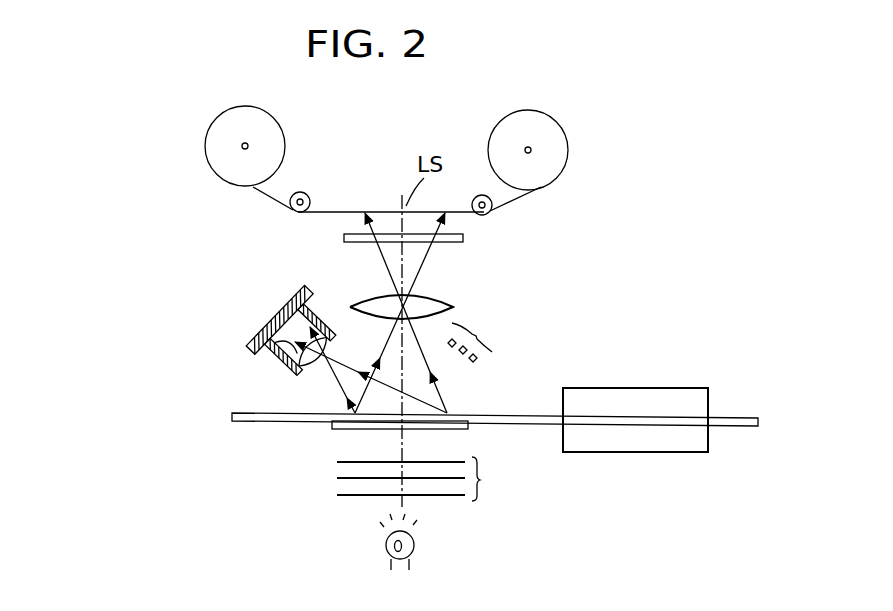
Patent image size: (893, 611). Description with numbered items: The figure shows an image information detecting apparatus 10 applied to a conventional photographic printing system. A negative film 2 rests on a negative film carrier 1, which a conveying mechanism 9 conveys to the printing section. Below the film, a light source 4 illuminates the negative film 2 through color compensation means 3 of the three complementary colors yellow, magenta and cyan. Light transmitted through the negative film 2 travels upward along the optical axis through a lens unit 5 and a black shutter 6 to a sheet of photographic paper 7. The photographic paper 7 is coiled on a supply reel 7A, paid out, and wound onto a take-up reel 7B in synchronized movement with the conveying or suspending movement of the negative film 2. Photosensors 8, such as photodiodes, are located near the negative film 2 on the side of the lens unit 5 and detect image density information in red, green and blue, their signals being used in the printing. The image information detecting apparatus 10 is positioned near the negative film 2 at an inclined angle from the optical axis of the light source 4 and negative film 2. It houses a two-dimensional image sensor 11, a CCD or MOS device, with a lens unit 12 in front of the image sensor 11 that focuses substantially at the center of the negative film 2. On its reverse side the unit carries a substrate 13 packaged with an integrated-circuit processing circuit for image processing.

The negative film carrier 1 is at (470, 430).
The negative film 2 is at (257, 423).
The color compensation means 3 is at (482, 480).
The light source 4 is at (385, 543).
The lens unit 5 is at (447, 302).
The black shutter 6 is at (465, 238).
The photographic paper 7 is at (323, 210).
The supply reel 7A is at (207, 143).
The take-up reel 7B is at (569, 148).
The photosensors 8 is at (568, 337).
The conveying mechanism 9 is at (701, 388).
The image information detecting apparatus 10 is at (215, 350).
The two-dimensional image sensor 11 is at (300, 362).
The lens unit 12 is at (331, 343).
The substrate 13 is at (282, 312).